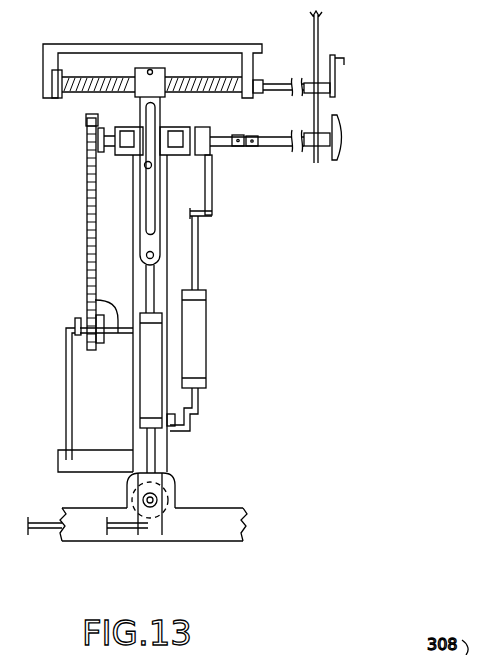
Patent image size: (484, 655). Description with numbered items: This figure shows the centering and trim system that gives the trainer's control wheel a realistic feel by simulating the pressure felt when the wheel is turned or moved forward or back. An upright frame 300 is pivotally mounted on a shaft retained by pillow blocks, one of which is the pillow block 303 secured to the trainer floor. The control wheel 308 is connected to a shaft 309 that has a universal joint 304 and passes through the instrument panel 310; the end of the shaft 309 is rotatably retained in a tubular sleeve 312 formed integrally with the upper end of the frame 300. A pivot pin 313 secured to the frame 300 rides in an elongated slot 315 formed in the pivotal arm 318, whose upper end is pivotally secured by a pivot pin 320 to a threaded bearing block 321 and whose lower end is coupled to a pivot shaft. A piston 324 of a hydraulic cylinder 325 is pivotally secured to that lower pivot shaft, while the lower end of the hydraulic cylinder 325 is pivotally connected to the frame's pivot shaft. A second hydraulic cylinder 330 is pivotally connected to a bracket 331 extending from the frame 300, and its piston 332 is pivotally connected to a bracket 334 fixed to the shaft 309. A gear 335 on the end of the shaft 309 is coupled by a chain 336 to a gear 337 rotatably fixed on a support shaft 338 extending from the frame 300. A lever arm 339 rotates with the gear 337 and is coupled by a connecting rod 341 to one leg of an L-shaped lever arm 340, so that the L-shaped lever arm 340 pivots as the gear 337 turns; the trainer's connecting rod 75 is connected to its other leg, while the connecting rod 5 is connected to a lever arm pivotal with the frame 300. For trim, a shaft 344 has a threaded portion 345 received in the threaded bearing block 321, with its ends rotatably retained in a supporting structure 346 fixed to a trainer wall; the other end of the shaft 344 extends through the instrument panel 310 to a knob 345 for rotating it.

The connecting rod 5 is at (40, 528).
The connecting rod 75 is at (121, 530).
The upright frame 300 is at (170, 463).
The pillow block 303 is at (216, 541).
The universal joint 304 is at (246, 117).
The control wheel 308 is at (341, 138).
The shaft 309 is at (290, 138).
The instrument panel 310 is at (320, 22).
The tubular sleeve 312 is at (172, 127).
The pivot pin 313 is at (145, 166).
The elongated slot 315 is at (148, 198).
The pivotal arm 318 is at (146, 243).
The pivot pin 320 is at (150, 67).
The threaded bearing block 321 is at (168, 66).
The piston 324 is at (150, 286).
The hydraulic cylinder 325 is at (145, 392).
The hydraulic cylinder 330 is at (206, 312).
The bracket 331 is at (176, 426).
The piston 332 is at (200, 237).
The bracket 334 is at (213, 196).
The gear 335 is at (96, 127).
The chain 336 is at (87, 158).
The gear 337 is at (104, 343).
The support shaft 338 is at (95, 300).
The lever arm 339 is at (77, 318).
The L-shaped lever arm 340 is at (97, 466).
The connecting rod 341 is at (66, 403).
The shaft 344 is at (276, 83).
The threaded portion 345 is at (220, 77).
The supporting structure 346 is at (79, 27).